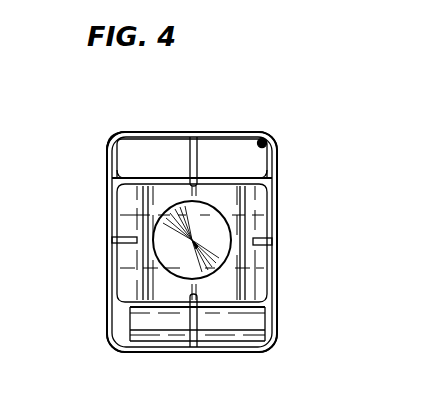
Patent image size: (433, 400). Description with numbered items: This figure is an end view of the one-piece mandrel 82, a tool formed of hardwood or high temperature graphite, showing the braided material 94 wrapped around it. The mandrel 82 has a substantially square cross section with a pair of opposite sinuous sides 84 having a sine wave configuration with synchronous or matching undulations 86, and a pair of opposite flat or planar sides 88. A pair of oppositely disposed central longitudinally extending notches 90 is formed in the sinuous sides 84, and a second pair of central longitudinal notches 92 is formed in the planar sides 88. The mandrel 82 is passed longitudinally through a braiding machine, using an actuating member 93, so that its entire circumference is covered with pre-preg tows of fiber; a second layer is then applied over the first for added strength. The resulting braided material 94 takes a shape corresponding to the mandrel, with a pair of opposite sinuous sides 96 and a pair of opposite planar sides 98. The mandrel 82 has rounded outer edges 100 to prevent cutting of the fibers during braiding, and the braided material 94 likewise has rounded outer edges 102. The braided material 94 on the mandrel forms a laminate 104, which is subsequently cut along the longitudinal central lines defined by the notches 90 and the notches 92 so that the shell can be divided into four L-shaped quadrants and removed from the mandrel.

The mandrel 82 is at (247, 113).
The sinuous sides 84 is at (157, 132).
The undulations 86 is at (252, 131).
The planar sides 88 is at (277, 178).
The notches in sinuous sides 90 is at (197, 140).
The notches in planar sides 92 is at (272, 242).
The actuating member 93 is at (213, 218).
The braided material 94 is at (114, 147).
The sinuous sides of braided material 96 is at (206, 350).
The planar sides of braided material 98 is at (114, 267).
The rounded outer edges 100 is at (272, 148).
The rounded outer edges of braided material 102 is at (113, 133).
The laminate 104 is at (104, 200).